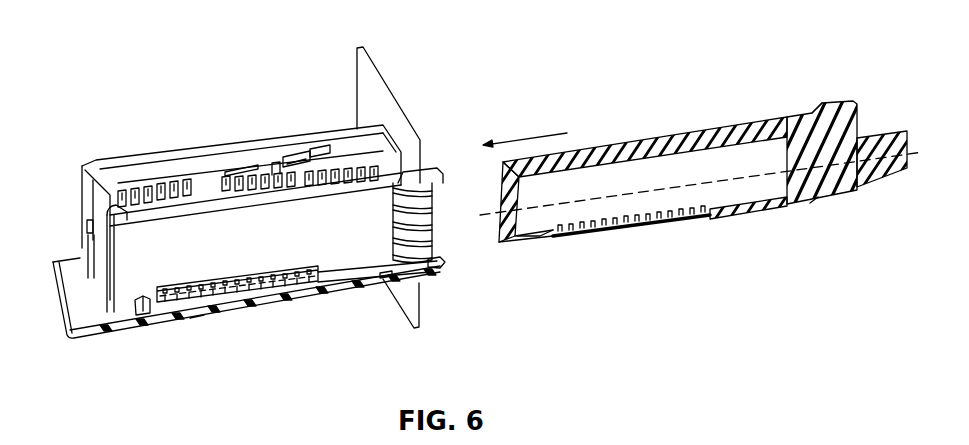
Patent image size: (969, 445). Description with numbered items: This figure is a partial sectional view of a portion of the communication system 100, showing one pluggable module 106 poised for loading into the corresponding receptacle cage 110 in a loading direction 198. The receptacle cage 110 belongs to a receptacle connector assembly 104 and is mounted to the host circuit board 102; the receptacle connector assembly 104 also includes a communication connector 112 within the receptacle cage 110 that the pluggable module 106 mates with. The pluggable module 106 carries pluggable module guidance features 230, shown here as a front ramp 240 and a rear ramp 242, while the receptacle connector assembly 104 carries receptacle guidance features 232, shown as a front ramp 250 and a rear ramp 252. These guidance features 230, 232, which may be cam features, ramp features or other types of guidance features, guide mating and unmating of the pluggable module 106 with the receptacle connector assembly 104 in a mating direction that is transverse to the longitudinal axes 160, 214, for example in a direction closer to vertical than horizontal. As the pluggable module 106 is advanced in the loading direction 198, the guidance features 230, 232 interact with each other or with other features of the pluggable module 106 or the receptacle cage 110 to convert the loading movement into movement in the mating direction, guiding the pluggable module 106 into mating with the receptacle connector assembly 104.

The communication system 100 is at (181, 54).
The host circuit board 102 is at (76, 340).
The receptacle connector assembly 104 is at (260, 133).
The pluggable module 106 is at (688, 122).
The receptacle cage 110 is at (210, 155).
The communication connector 112 is at (198, 318).
The longitudinal axis 160 is at (269, 308).
The loading direction 198 is at (523, 137).
The longitudinal axis 214 is at (727, 182).
The pluggable module guidance feature 230 is at (821, 98).
The receptacle guidance feature 232 is at (113, 215).
The front ramp 240 is at (812, 111).
The rear ramp 242 is at (521, 236).
The front ramp 250 is at (433, 270).
The rear ramp 252 is at (118, 250).